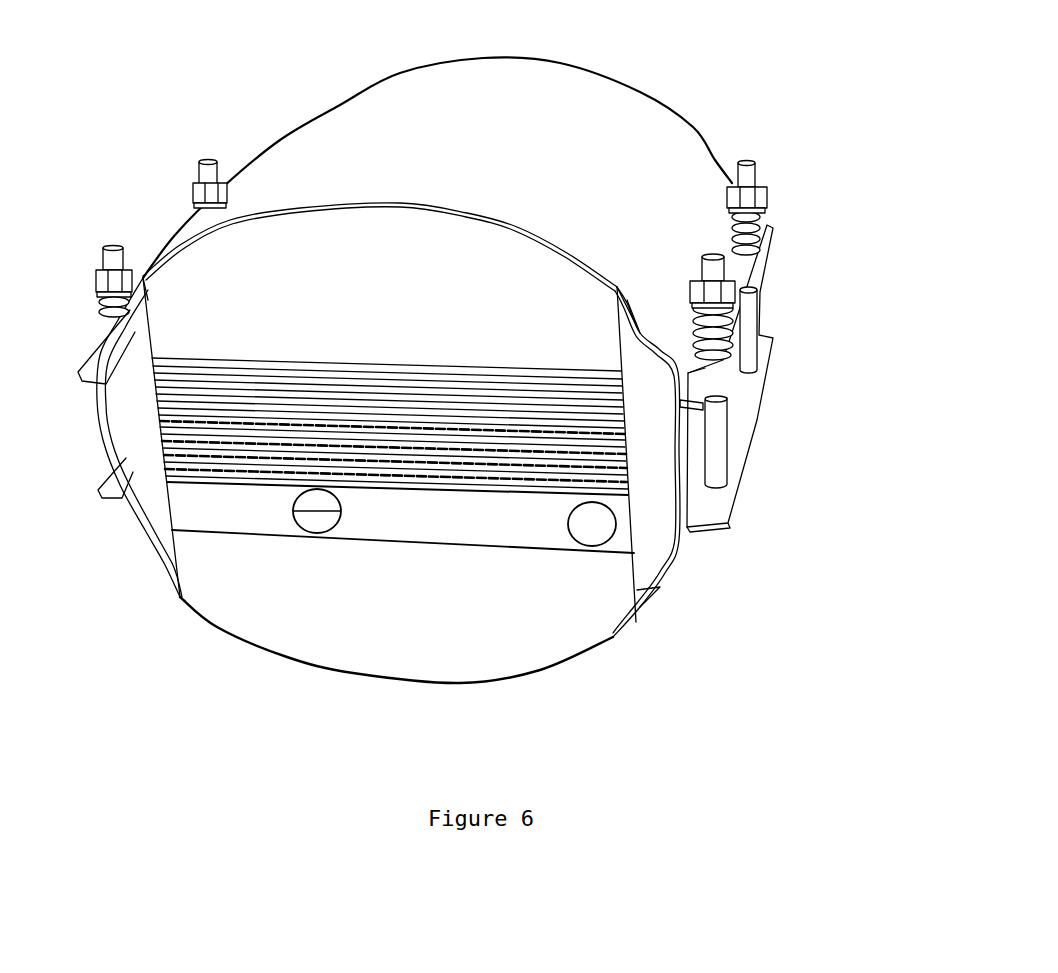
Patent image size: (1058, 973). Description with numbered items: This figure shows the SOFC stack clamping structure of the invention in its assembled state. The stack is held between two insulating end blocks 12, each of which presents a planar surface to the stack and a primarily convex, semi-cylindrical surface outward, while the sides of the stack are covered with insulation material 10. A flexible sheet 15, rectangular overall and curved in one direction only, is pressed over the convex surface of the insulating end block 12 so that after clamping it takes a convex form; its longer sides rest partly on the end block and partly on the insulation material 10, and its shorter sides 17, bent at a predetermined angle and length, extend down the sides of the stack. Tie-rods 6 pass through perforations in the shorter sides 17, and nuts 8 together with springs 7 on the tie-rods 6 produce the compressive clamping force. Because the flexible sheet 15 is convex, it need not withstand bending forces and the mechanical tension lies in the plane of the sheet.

The tie-rod 6 is at (715, 432).
The spring 7 is at (703, 337).
The nut 8 is at (770, 198).
The insulation material 10 is at (148, 467).
The insulating end block 12 is at (280, 337).
The flexible sheet 15 is at (543, 123).
The shorter side 17 is at (700, 521).